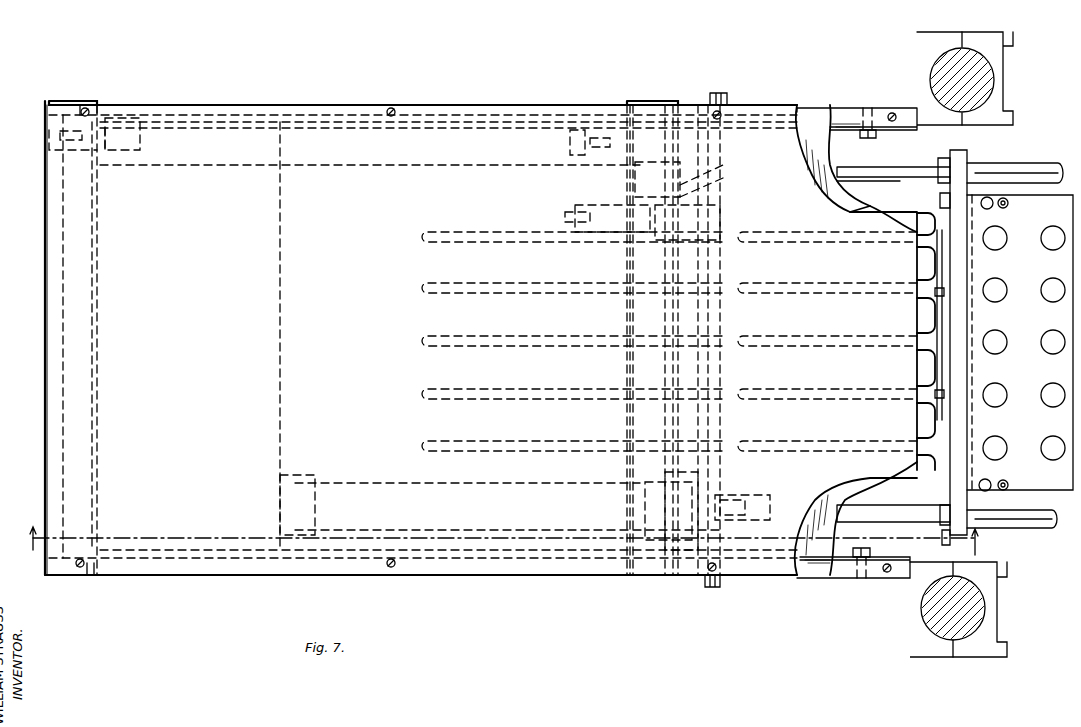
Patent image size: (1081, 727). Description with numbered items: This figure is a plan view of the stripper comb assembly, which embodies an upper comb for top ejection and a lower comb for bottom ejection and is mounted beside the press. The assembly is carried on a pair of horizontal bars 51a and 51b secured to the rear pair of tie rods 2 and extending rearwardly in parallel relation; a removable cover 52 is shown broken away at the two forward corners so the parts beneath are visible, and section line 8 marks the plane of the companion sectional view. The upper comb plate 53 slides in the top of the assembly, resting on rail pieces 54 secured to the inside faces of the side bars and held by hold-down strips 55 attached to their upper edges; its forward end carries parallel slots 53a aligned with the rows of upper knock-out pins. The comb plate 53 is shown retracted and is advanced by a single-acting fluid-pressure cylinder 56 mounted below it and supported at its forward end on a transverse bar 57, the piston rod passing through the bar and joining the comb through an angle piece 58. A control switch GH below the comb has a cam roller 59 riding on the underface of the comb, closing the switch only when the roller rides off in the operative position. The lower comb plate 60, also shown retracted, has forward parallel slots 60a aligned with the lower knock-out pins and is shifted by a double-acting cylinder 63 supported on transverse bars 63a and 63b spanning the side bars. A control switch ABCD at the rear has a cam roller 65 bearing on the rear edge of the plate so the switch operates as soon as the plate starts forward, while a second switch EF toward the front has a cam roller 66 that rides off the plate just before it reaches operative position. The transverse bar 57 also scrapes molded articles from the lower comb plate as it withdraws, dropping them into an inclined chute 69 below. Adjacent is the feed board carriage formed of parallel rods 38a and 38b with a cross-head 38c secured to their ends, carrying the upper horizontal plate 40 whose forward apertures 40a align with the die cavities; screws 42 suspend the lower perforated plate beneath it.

The tie rods 2 is at (990, 80).
The section line 8- 8 is at (502, 541).
The parallel rod 38a is at (1030, 530).
The parallel rod 38b is at (1050, 166).
The cross-head 38c is at (962, 160).
The upper horizontal plate 40 is at (1020, 342).
The apertures 40a is at (1040, 308).
The screws 42 is at (1010, 204).
The horizontal bar 51a is at (828, 572).
The horizontal bar 51b is at (842, 112).
The removable cover 52 is at (835, 212).
The comb plate 53 is at (278, 290).
The parallel slots 53a is at (795, 315).
The rail pieces 54 is at (887, 128).
The hold-down strips 55 is at (800, 108).
The fluid-pressure actuated cylinder 56 is at (385, 483).
The transverse bar 57 is at (708, 318).
The angle piece 58 is at (752, 496).
The operating cam roller 59 is at (563, 217).
The lower comb plate 60 is at (727, 318).
The parallel slots 60a is at (473, 245).
The fluid pressure actuated cylinder 63 is at (310, 168).
The transverse bar 63a is at (98, 292).
The transverse bar 63b is at (625, 312).
The operating cam roller 65 is at (58, 135).
The operating cam roller 66 is at (595, 136).
The inclined chute 69 is at (893, 180).
The control switch ABCD is at (142, 140).
The control switch EF is at (568, 148).
The control switch GH is at (593, 204).